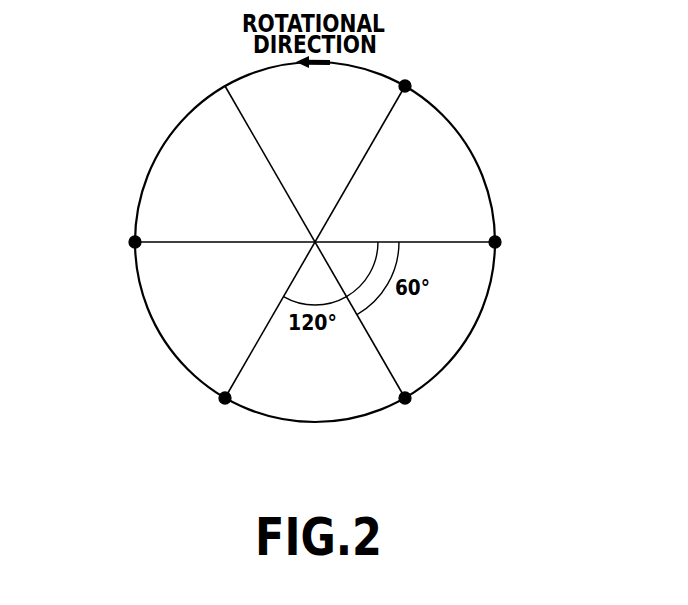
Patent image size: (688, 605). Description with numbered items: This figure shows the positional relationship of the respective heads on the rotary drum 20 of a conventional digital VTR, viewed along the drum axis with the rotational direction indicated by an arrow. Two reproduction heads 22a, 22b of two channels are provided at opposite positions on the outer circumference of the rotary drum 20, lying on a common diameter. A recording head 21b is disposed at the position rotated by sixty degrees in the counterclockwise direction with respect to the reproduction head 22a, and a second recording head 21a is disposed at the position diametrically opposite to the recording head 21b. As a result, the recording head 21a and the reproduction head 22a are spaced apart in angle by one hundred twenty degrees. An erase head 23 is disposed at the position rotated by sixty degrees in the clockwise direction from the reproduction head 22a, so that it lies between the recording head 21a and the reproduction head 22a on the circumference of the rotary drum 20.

The rotary drum 20 is at (373, 72).
The recording head 21a is at (217, 397).
The recording head 21b is at (410, 87).
The reproduction head 22a is at (500, 243).
The reproduction head 22b is at (133, 238).
The erase head 23 is at (412, 399).